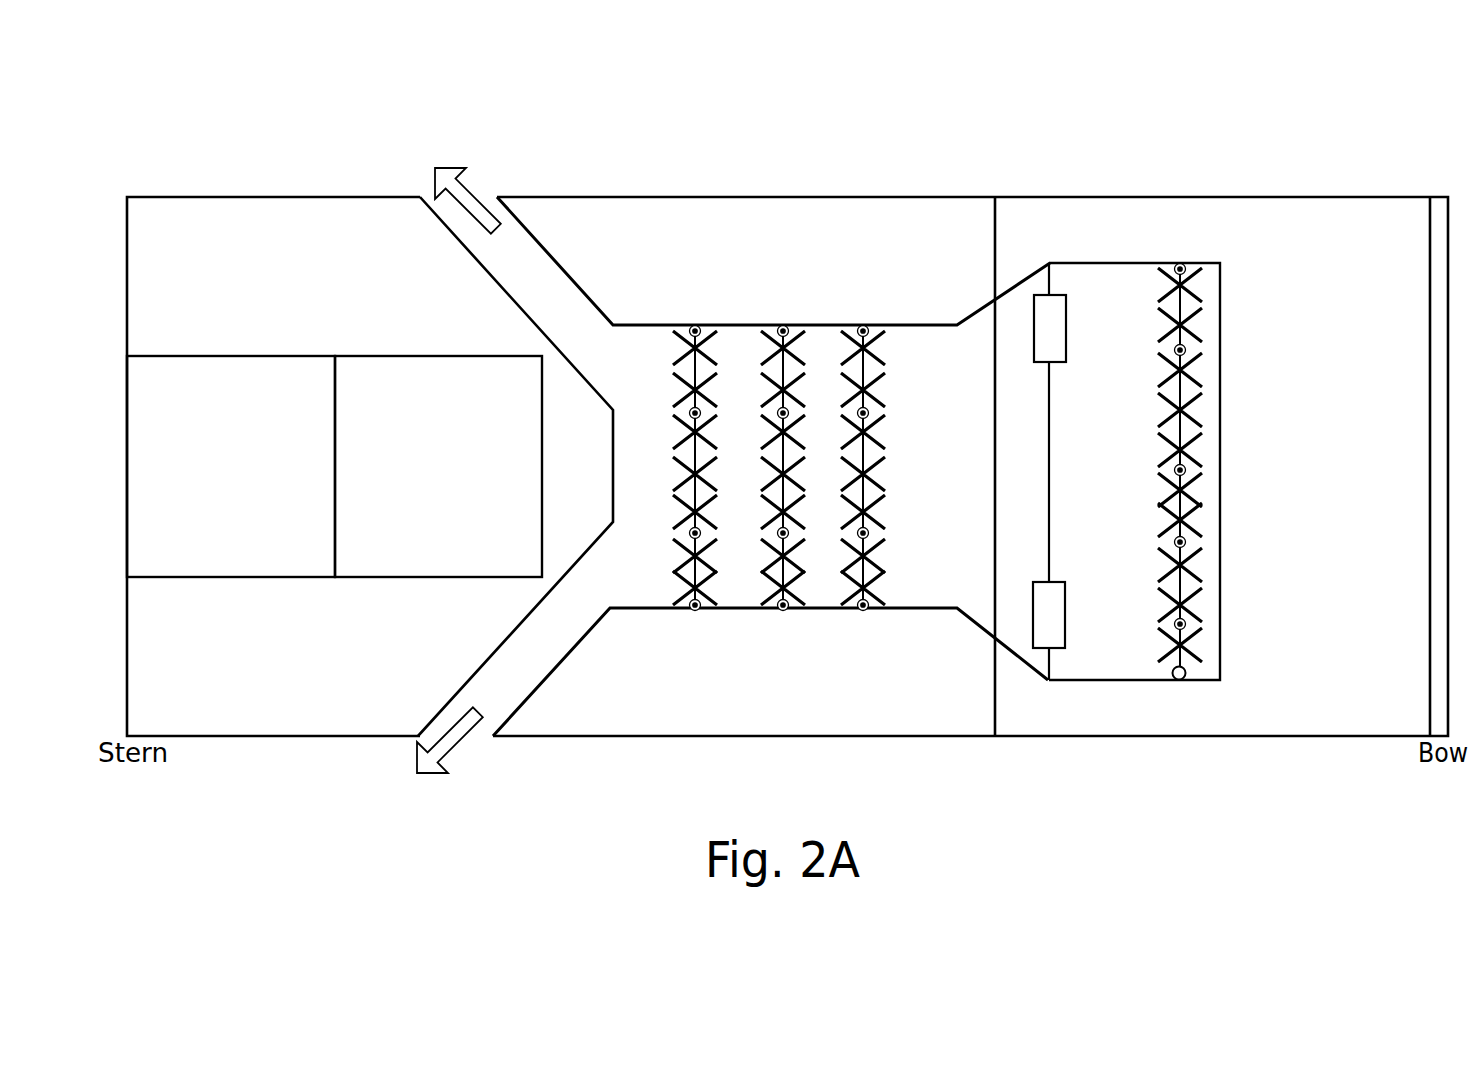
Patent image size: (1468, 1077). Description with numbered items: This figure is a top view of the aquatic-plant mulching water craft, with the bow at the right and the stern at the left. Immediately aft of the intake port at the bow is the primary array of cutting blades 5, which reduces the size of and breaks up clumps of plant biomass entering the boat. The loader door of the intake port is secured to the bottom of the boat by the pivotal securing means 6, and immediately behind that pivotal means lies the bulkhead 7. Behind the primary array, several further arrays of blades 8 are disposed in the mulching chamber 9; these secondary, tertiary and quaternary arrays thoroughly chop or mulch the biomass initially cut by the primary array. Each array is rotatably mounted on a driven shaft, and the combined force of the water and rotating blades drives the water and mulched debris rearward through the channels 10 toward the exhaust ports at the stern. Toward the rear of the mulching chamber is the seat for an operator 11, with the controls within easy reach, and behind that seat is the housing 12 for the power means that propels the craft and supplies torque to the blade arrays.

The primary array of cutting blades 5 is at (1160, 302).
The pivotal securing means 6 is at (1062, 310).
The bulkhead 7 is at (992, 265).
The secondary arrays of cutting blades 8 is at (837, 332).
The mulching chamber 9 is at (740, 345).
The channels 10 is at (515, 272).
The seat for an operator 11 is at (417, 403).
The housing for the power means 12 is at (240, 393).